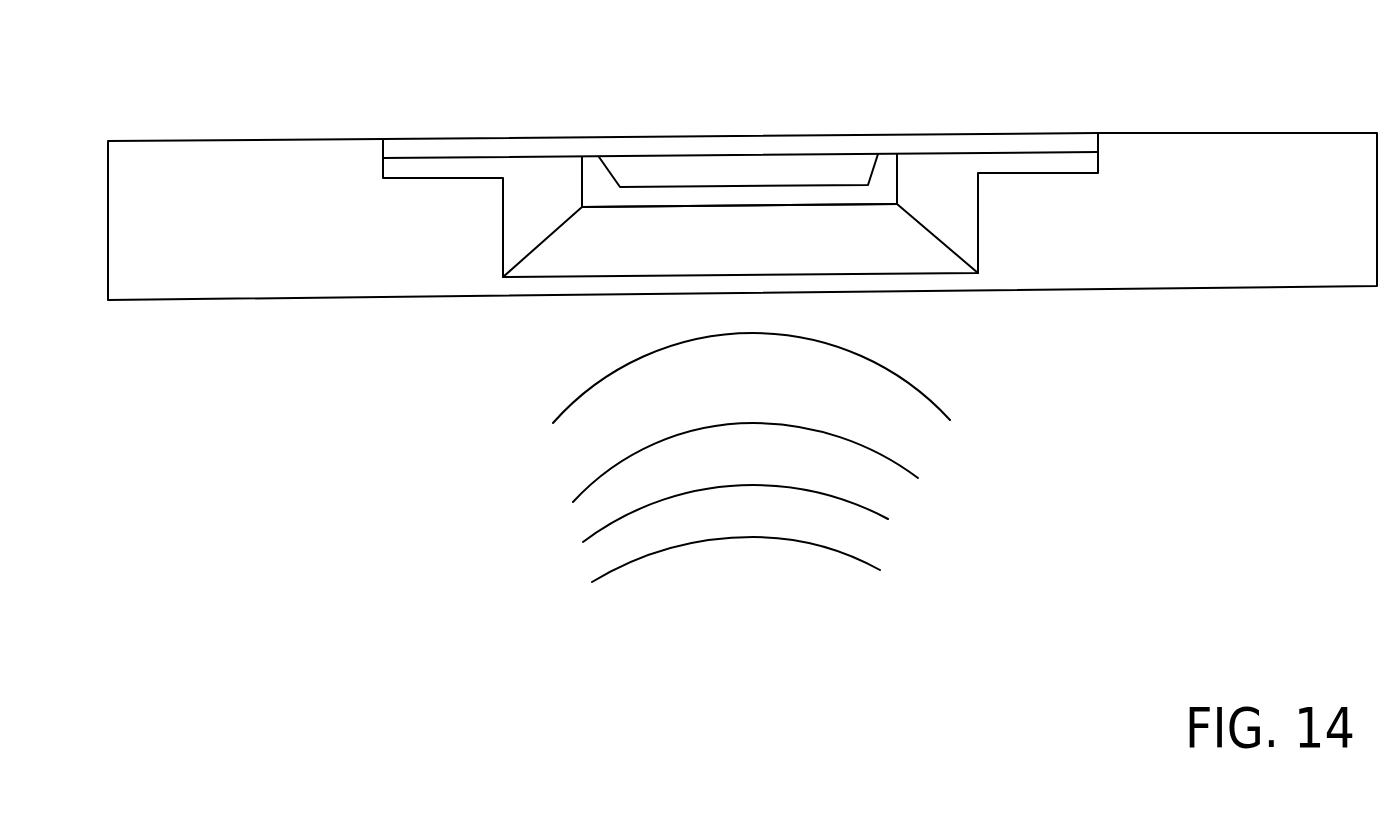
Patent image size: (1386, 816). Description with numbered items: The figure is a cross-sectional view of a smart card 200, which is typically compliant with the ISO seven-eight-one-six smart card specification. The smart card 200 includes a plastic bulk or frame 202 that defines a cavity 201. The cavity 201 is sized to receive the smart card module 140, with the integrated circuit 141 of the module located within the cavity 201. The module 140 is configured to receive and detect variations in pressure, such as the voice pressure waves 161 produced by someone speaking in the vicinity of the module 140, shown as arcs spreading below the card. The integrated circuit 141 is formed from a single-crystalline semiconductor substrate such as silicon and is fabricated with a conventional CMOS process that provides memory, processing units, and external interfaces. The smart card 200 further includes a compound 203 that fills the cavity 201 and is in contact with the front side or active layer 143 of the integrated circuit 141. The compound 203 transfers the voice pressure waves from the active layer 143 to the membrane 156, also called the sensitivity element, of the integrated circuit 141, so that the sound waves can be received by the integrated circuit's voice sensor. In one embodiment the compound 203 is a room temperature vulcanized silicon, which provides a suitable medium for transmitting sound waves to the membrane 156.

The smart card module 140 is at (715, 128).
The integrated circuit 141 is at (580, 199).
The active layer 143 is at (608, 208).
The membrane 156 is at (701, 197).
The voice pressure waves 161 is at (773, 538).
The smart card 200 is at (347, 375).
The cavity 201 is at (955, 206).
The frame 202 is at (168, 290).
The compound 203 is at (757, 258).